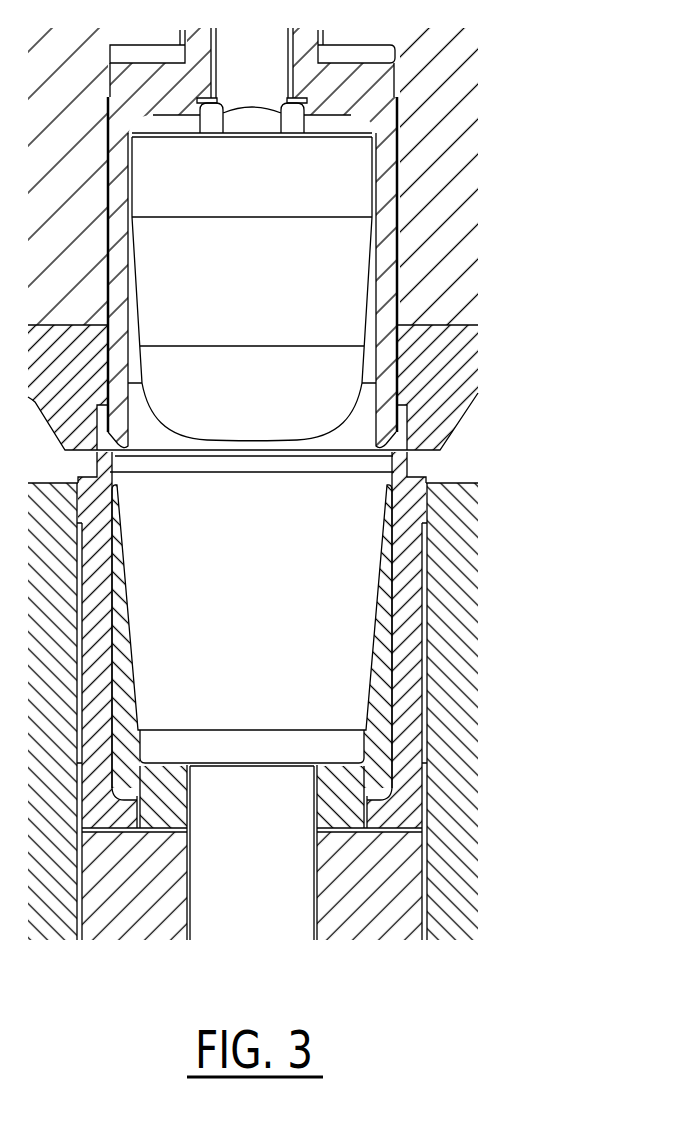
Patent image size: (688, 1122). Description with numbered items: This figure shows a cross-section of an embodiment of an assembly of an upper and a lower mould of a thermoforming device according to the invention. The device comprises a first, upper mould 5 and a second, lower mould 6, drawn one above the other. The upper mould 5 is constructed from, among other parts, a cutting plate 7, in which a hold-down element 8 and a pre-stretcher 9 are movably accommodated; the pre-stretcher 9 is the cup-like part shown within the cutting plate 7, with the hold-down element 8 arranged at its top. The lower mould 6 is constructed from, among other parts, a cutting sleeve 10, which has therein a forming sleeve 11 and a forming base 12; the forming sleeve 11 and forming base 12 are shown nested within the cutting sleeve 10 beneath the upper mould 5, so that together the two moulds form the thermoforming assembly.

The upper mould 5 is at (512, 172).
The lower mould 6 is at (513, 637).
The cutting plate 7 is at (437, 352).
The hold-down element 8 is at (358, 85).
The pre-stretcher 9 is at (213, 295).
The cutting sleeve 10 is at (407, 503).
The forming sleeve 11 is at (373, 692).
The forming base 12 is at (178, 743).